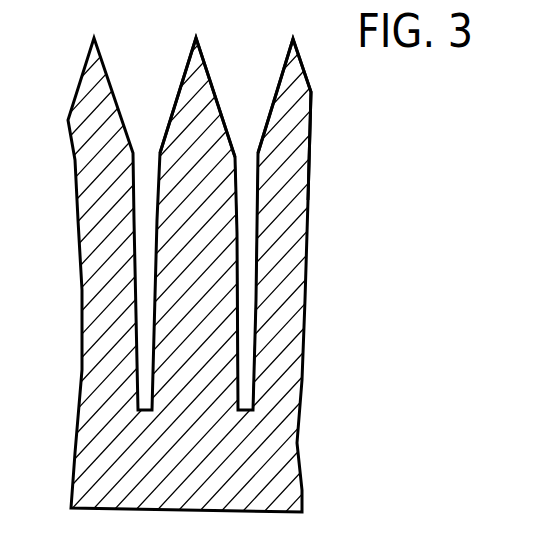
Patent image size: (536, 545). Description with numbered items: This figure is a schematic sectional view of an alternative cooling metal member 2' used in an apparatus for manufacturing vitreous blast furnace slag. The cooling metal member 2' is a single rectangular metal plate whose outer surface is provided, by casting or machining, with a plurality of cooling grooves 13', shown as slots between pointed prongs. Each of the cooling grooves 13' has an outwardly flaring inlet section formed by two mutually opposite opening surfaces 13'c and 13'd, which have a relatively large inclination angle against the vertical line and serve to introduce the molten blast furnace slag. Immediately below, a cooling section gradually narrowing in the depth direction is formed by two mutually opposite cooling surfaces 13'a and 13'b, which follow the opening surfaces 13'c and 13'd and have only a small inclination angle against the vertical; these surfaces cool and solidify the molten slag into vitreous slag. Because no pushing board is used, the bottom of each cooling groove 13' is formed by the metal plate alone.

The cooling metal member 2' is at (268, 272).
The cooling grooves 13' is at (292, 281).
The cooling surface 13'a is at (301, 281).
The cooling surface 13'b is at (292, 283).
The opening surface 13'c is at (210, 96).
The opening surface 13'd is at (309, 119).